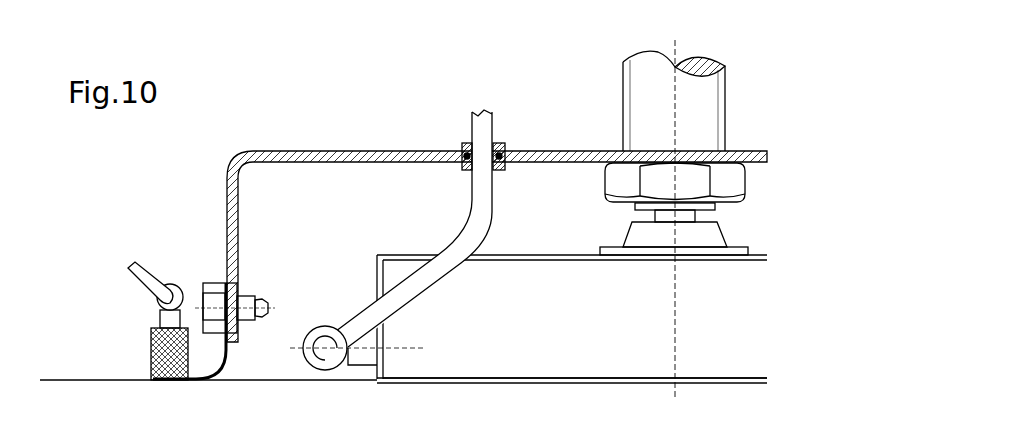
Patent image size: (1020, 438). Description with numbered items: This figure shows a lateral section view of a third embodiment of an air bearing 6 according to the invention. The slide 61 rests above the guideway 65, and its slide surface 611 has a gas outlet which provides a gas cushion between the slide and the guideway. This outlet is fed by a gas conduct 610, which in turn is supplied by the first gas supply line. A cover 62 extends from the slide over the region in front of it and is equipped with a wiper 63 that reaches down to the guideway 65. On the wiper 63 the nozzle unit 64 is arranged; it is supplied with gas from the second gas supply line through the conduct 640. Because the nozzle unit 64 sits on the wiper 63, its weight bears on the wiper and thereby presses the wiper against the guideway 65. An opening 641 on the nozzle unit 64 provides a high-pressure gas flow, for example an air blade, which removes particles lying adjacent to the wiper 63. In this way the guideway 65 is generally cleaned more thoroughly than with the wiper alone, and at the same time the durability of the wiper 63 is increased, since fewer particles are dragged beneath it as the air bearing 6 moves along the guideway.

The air bearing 6 is at (246, 120).
The slide 61 is at (538, 337).
The gas conduct 610 is at (482, 213).
The slide surface 611 is at (600, 378).
The cover 62 is at (298, 216).
The wiper 63 is at (228, 360).
The nozzle unit 64 is at (150, 352).
The conduct 640 is at (172, 280).
The opening 641 is at (152, 365).
The guideway 65 is at (68, 380).